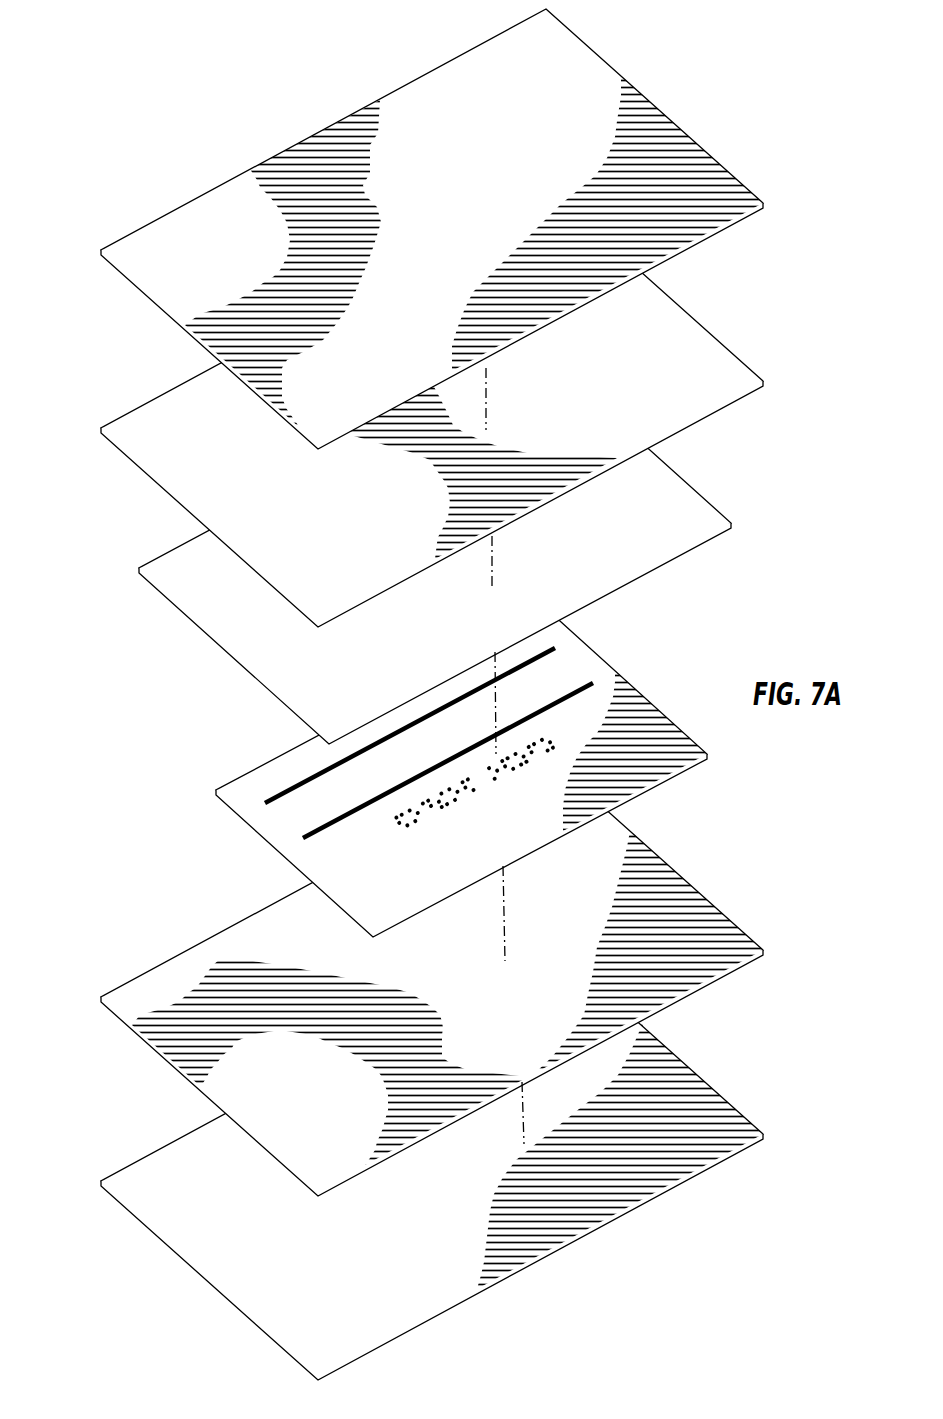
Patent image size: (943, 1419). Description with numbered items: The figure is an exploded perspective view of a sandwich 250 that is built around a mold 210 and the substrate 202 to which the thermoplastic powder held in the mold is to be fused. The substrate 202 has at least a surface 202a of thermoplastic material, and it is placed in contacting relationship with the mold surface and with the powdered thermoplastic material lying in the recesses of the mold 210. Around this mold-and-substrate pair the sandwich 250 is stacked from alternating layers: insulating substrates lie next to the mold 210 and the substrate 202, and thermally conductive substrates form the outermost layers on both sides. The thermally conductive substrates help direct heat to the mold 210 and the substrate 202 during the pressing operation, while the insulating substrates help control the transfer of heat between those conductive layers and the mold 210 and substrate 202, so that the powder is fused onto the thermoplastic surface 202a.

The sandwich 250 is at (66, 256).
The substrate 202 is at (678, 510).
The surface of thermoplastic material 202a is at (693, 547).
The mold 210 is at (662, 706).